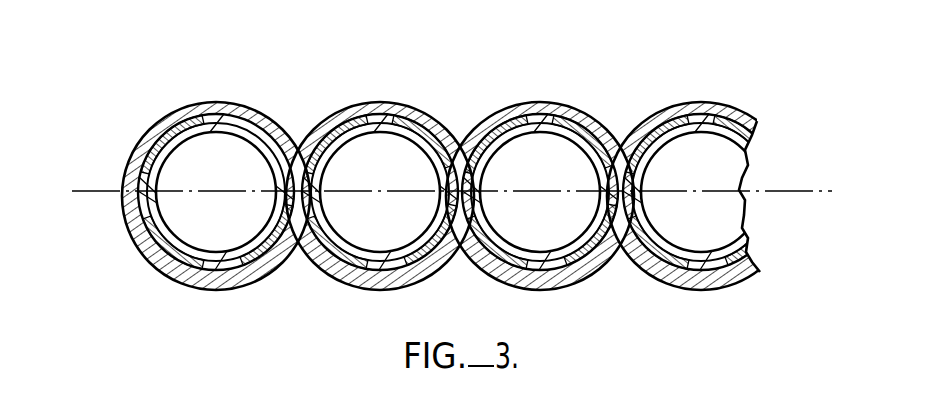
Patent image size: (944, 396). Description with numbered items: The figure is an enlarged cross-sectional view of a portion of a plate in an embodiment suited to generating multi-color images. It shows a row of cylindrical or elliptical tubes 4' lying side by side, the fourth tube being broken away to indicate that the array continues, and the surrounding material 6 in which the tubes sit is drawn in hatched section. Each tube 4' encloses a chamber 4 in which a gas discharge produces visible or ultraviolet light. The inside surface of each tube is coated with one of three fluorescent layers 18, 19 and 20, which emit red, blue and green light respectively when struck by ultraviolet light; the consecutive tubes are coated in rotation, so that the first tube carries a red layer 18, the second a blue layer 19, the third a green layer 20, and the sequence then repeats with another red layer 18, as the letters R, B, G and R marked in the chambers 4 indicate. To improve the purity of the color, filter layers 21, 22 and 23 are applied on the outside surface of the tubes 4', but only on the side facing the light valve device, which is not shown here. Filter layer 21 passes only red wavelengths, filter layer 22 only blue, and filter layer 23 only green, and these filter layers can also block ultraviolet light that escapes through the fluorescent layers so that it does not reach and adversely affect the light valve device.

The chamber 4 is at (458, 192).
The tube 4' is at (456, 187).
The support body 6 is at (250, 283).
The fluorescent layer 18 is at (243, 108).
The fluorescent layer 19 is at (405, 104).
The fluorescent layer 20 is at (562, 104).
The filter layer 21 is at (188, 101).
The filter layer 22 is at (362, 104).
The filter layer 23 is at (524, 103).